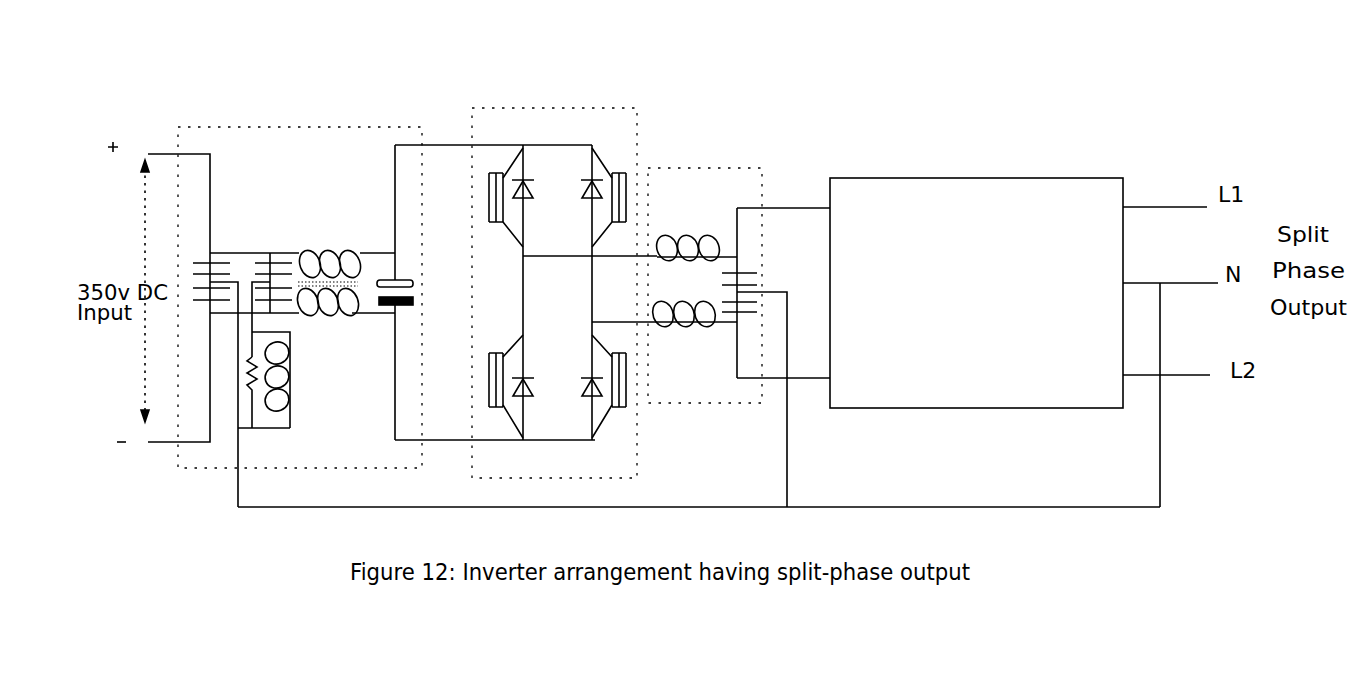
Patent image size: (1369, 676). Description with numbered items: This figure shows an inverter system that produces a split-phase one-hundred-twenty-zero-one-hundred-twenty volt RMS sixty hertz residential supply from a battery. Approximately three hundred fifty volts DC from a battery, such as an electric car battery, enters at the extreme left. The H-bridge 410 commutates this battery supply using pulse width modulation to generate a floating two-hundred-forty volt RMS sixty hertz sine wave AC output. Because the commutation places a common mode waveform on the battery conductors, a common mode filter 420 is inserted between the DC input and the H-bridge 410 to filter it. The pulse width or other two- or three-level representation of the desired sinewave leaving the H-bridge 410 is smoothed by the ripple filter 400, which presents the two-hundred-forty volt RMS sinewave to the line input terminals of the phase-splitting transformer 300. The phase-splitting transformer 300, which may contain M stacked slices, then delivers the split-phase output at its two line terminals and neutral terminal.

The common mode filter 420 is at (417, 57).
The H-bridge 410 is at (550, 106).
The ripple filter 400 is at (802, 103).
The phase-splitting transformer 300 is at (972, 304).